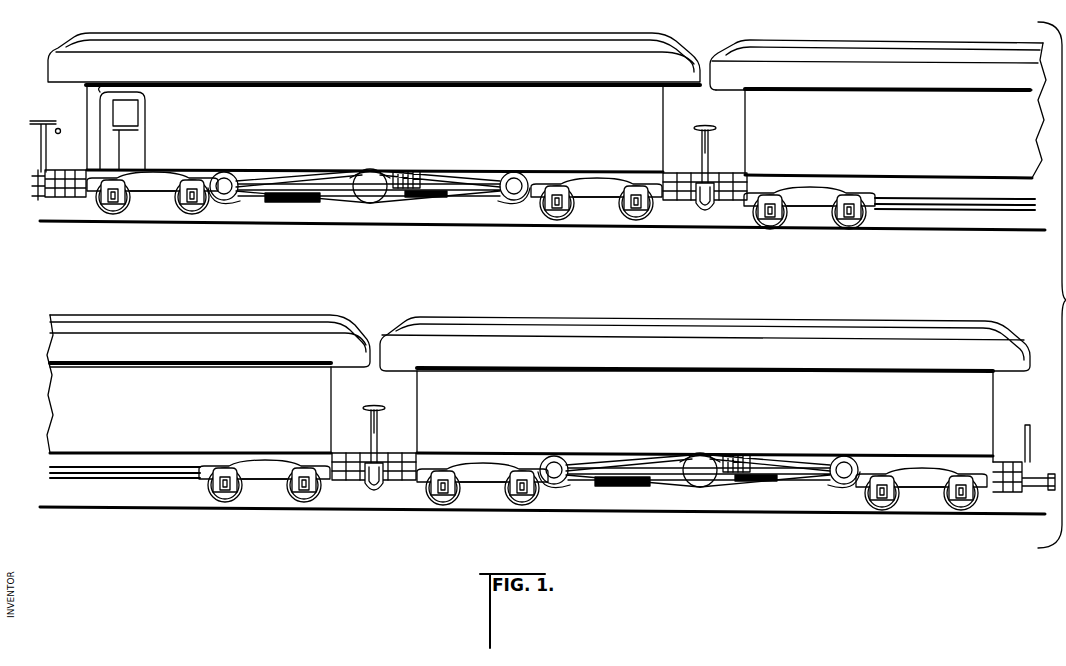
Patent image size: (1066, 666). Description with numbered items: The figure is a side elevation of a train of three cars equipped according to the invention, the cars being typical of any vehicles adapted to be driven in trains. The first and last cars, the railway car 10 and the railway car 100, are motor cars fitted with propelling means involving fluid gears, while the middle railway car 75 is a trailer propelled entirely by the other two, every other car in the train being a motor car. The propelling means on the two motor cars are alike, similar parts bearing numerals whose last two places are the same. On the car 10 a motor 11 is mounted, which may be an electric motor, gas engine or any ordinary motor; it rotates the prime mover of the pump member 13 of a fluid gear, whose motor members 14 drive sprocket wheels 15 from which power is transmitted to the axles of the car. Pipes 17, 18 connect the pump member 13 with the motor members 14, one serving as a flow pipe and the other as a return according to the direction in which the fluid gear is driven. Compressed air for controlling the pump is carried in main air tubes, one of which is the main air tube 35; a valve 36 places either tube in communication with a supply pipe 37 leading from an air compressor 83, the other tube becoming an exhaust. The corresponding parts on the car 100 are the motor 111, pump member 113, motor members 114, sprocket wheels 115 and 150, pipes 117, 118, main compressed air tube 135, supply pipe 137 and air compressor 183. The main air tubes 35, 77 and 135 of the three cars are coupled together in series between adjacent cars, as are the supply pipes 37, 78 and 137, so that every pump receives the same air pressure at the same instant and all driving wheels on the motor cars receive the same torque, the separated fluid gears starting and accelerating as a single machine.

The railway car 10 is at (374, 102).
The motor 11 is at (425, 178).
The pump member 13 is at (365, 177).
The motor members 14 is at (226, 180).
The sprocket wheels 15 is at (236, 203).
The pipe 17 is at (312, 174).
The pipe 18 is at (350, 206).
The main air tube 35 is at (462, 197).
The valve 36 is at (68, 129).
The supply pipe 37 is at (368, 201).
The railway car 75 is at (546, 246).
The main compressed air tube 77 is at (951, 197).
The supply pipe 78 is at (946, 212).
The air compressor 83 is at (295, 204).
The railway car 100 is at (705, 389).
The motor 111 is at (770, 438).
The pump member 113 is at (689, 445).
The motor members 114 is at (699, 453).
The sprocket wheels 115 is at (830, 490).
The pipe 117 is at (629, 449).
The pipe 118 is at (698, 507).
The main compressed air tube 135 is at (699, 515).
The supply pipe 137 is at (684, 500).
The sprocket wheel 150 is at (572, 487).
The air compressor 183 is at (686, 511).